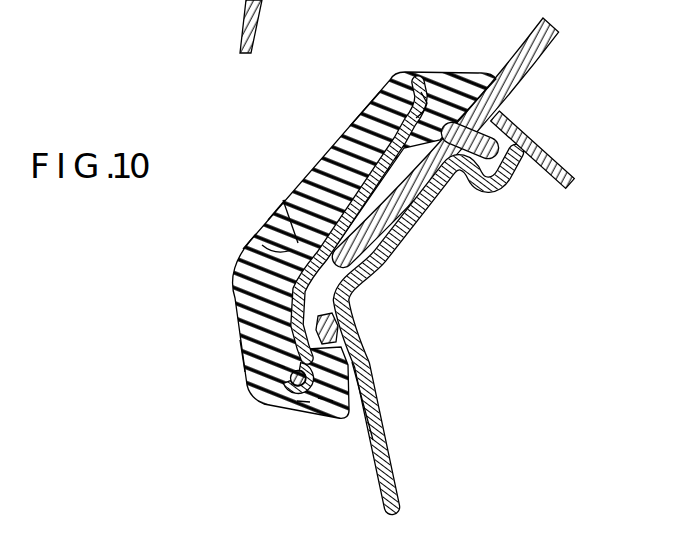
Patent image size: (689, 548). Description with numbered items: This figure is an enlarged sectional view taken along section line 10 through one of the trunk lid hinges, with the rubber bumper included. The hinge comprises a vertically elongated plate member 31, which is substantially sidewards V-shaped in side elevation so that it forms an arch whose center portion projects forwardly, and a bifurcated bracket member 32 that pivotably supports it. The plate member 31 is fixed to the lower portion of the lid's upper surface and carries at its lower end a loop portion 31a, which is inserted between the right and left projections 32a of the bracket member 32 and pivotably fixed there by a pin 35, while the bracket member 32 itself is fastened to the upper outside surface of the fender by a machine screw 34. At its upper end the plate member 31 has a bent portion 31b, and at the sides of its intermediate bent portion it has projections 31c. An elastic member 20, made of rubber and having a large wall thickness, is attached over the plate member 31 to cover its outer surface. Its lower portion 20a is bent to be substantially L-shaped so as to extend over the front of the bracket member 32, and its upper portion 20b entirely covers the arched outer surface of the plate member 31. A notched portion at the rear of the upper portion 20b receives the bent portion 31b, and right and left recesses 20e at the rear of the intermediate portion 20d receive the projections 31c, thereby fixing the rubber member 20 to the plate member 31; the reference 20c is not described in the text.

The section line 10 is at (208, 33).
The elastic member 20 is at (236, 306).
The lower portion of rubber member 20a is at (242, 356).
The upper portion of rubber member 20b is at (363, 108).
The mounting lip 20c is at (441, 76).
The intermediate portion of rubber member 20d is at (287, 222).
The recesses 20e is at (266, 246).
The plate member 31 is at (372, 190).
The loop portion 31a is at (311, 398).
The bent portion 31b is at (421, 92).
The projections 31c is at (283, 200).
The bracket member 32 is at (312, 356).
The projections of bracket member 32a is at (306, 345).
The machine screw 34 is at (330, 322).
The pin 35 is at (292, 390).